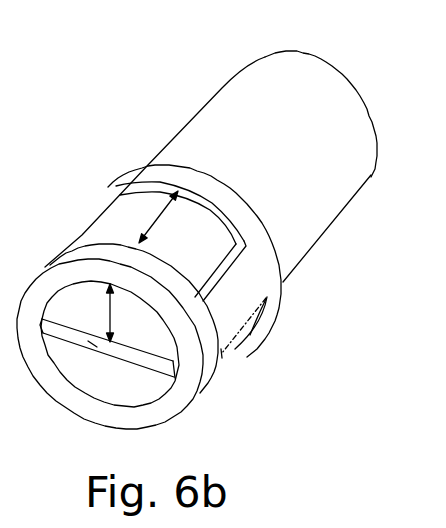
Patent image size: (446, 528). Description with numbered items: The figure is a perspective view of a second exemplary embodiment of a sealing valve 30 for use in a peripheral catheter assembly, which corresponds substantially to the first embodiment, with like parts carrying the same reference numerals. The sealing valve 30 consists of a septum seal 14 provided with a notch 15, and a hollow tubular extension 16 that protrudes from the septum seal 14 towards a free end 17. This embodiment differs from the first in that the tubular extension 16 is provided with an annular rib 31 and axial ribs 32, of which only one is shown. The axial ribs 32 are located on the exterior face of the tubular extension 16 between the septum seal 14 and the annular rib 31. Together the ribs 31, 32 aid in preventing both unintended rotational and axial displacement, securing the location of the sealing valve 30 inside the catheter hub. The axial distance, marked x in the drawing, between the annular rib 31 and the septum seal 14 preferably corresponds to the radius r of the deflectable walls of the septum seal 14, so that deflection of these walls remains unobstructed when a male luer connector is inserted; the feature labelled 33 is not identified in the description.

The sealing valve 30 is at (158, 107).
The septum seal 14 is at (188, 365).
The notch 15 is at (95, 350).
The tubular extension 16 is at (302, 214).
The free end 17 is at (337, 100).
The annular rib 31 is at (132, 174).
The axial ribs 32 is at (230, 307).
The neck slot region 33 is at (103, 225).